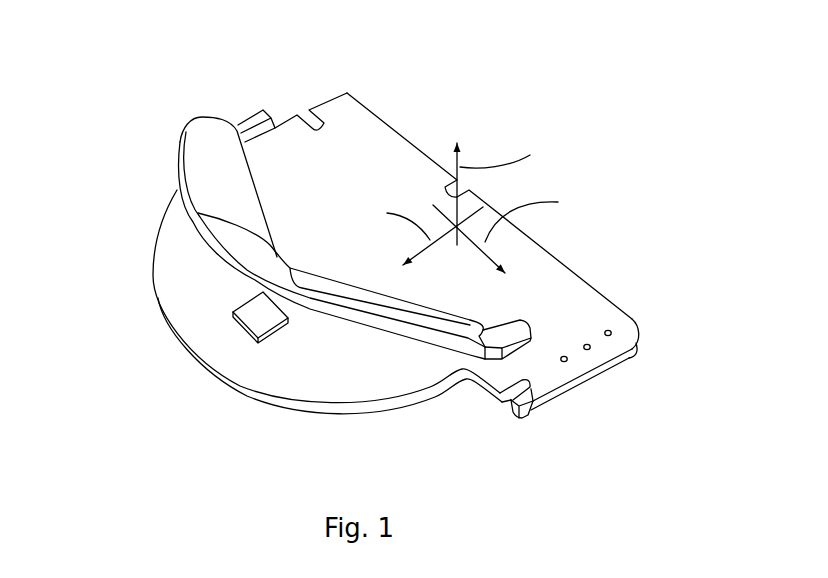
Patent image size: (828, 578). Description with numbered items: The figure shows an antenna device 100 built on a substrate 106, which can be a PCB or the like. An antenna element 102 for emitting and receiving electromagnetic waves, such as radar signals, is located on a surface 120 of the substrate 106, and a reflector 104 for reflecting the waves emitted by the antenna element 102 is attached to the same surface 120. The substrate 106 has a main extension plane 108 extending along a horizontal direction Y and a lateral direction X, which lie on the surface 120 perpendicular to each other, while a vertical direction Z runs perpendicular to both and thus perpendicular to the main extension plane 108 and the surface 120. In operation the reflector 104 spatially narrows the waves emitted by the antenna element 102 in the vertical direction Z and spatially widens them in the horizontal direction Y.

The antenna device 100 is at (431, 103).
The antenna element 102 is at (273, 328).
The reflector 104 is at (178, 152).
The substrate 106 is at (590, 284).
The main extension plane 108 is at (215, 292).
The surface 120 is at (627, 342).